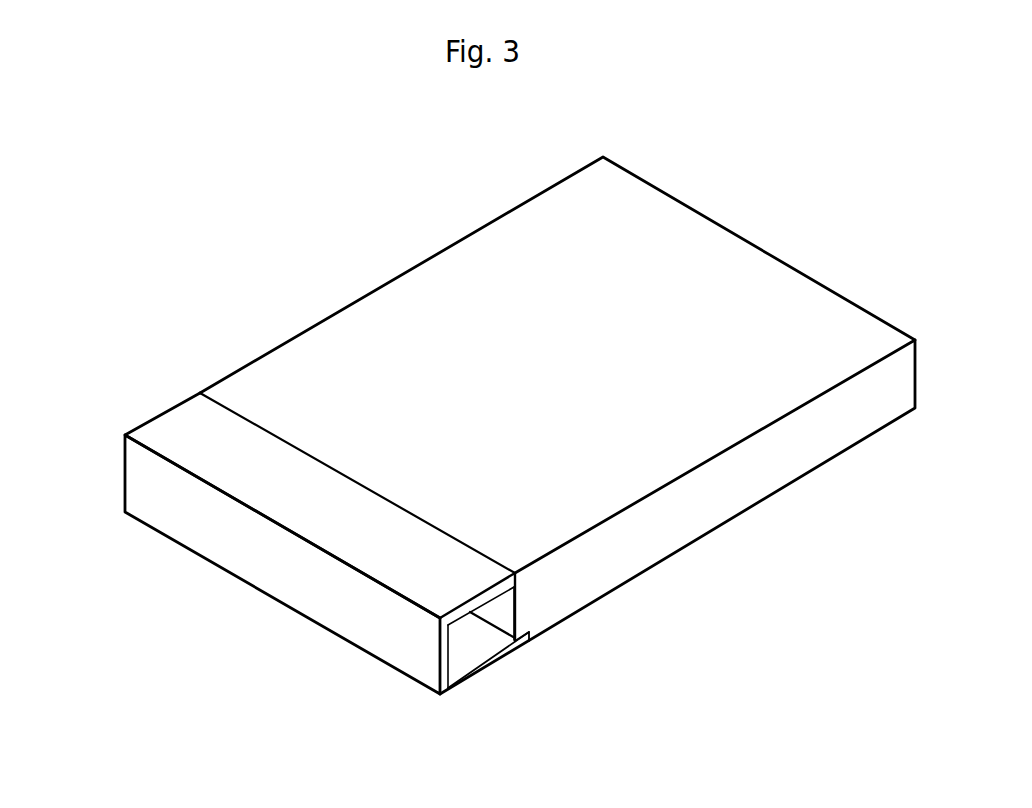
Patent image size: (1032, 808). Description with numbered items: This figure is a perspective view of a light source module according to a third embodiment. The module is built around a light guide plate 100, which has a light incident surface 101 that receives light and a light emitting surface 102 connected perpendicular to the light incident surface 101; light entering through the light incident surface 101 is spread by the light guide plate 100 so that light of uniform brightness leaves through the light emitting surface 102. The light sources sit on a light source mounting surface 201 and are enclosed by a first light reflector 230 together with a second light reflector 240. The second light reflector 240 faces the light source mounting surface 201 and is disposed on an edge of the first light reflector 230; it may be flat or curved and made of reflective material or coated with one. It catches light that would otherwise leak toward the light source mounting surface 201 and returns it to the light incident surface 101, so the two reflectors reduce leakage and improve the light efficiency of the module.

The light guide plate 100 is at (686, 556).
The light incident surface 101 is at (510, 612).
The light emitting surface 102 is at (377, 308).
The light source mounting surface 201 is at (490, 645).
The first light reflector 230 is at (138, 483).
The second light reflector 240 is at (462, 560).